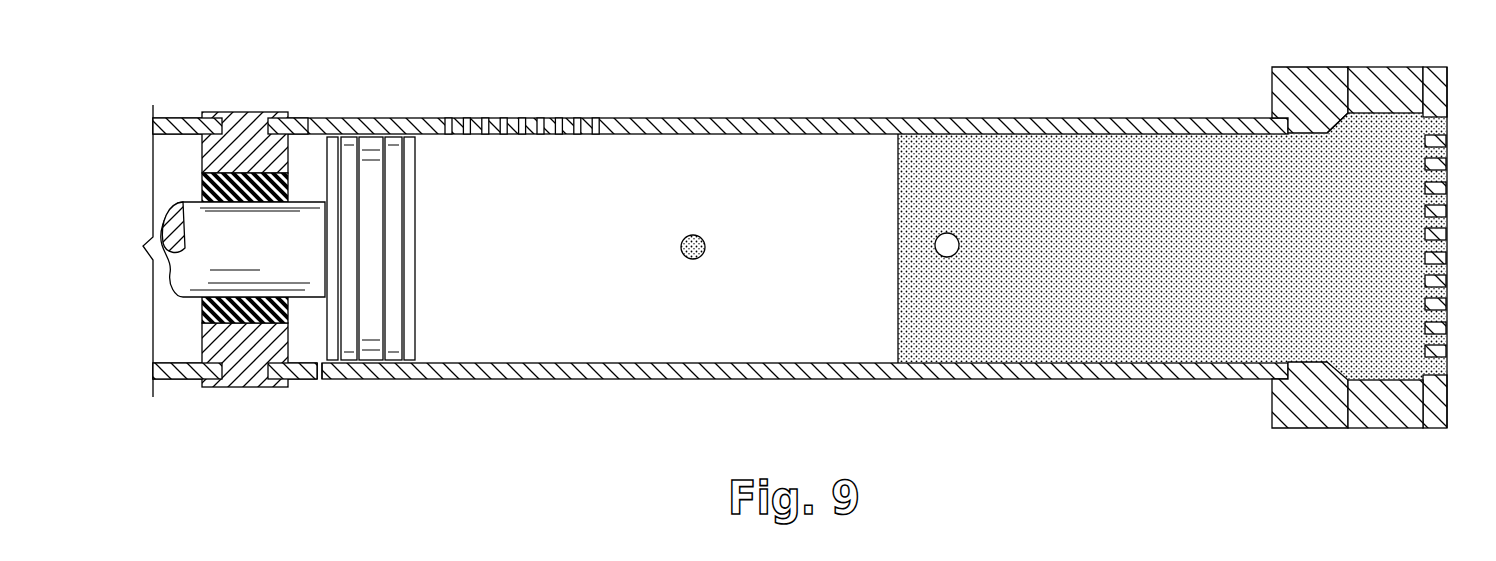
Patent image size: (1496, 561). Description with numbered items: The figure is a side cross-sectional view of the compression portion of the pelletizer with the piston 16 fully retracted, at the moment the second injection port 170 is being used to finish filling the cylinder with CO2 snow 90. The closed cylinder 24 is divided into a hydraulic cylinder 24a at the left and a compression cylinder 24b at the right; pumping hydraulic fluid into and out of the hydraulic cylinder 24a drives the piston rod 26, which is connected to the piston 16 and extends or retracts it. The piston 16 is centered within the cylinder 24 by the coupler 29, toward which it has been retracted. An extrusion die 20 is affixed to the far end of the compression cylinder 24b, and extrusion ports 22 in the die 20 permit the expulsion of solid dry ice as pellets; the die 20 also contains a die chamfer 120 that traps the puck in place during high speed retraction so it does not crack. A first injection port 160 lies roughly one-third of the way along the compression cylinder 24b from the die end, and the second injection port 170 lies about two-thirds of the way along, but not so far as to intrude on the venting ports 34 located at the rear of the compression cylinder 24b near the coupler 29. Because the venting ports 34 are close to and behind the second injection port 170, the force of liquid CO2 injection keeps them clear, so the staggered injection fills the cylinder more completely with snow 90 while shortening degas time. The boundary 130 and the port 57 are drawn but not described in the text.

The piston 16 is at (413, 253).
The extrusion die 20 is at (1271, 86).
The extrusion ports 22 is at (1449, 248).
The closed cylinder 24 is at (552, 383).
The hydraulic cylinder 24a is at (157, 350).
The compression cylinder 24b is at (657, 334).
The piston rod 26 is at (228, 260).
The coupler 29 is at (246, 388).
The venting ports 34 is at (502, 118).
The port 57 is at (321, 381).
The CO2 snow 90 is at (1206, 352).
The die chamfer 120 is at (1338, 126).
The boundary face 130 is at (897, 312).
The first injection port 160 is at (939, 236).
The second injection port 170 is at (690, 234).